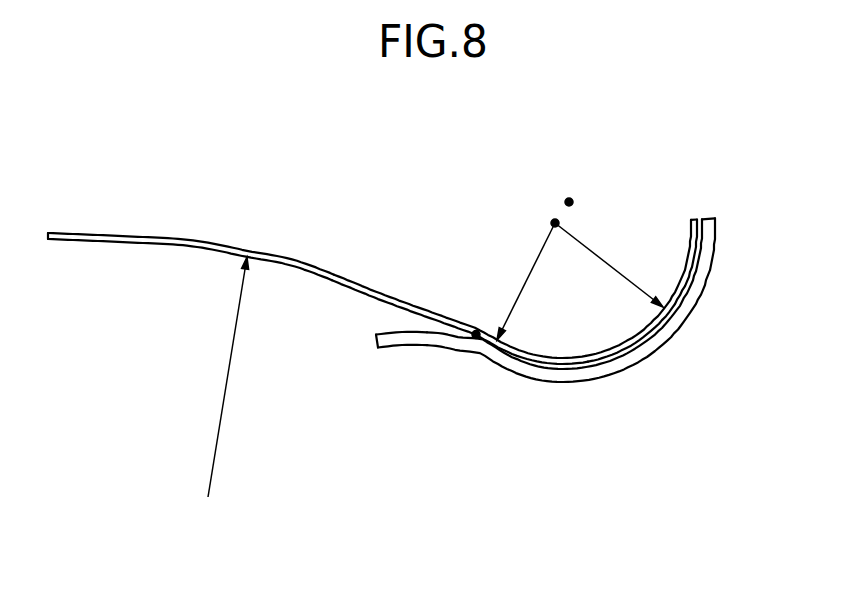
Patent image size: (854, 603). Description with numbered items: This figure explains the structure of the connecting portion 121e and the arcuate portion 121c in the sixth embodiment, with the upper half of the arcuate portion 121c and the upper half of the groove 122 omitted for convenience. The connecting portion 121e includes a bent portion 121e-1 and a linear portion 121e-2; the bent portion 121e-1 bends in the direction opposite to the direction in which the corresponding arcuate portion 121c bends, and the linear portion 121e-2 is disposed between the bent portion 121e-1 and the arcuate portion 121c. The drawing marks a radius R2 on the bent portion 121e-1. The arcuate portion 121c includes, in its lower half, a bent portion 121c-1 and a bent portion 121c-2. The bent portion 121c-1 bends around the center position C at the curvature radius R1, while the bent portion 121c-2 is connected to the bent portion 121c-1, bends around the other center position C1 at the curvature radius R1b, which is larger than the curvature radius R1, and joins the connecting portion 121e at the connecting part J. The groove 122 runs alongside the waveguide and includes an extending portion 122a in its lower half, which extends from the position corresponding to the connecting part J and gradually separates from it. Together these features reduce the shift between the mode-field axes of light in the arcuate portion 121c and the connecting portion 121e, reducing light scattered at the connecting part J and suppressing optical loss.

The connecting portion 121e is at (263, 222).
The bent portion 121e-1 is at (225, 245).
The linear portion 121e-2 is at (405, 246).
The arcuate portion 121c is at (634, 383).
The bent portion 121c-1 is at (642, 360).
The bent portion 121c-2 is at (528, 366).
The groove 122 is at (580, 330).
The extending portion 122a is at (410, 346).
The connecting part J is at (476, 332).
The center position C is at (555, 221).
The other center position C1 is at (572, 201).
The curvature radius R1 is at (609, 265).
The curvature radius R1b is at (544, 281).
The radius of curvature of extended portion R2 is at (219, 377).